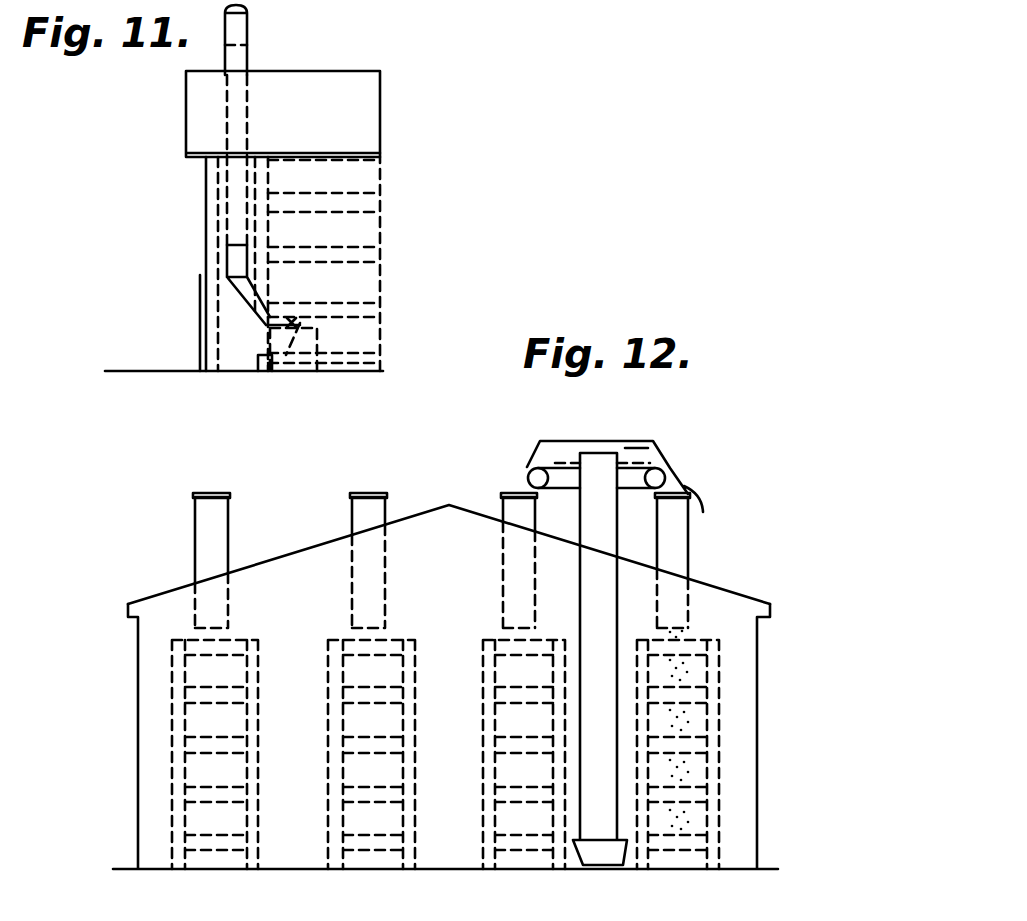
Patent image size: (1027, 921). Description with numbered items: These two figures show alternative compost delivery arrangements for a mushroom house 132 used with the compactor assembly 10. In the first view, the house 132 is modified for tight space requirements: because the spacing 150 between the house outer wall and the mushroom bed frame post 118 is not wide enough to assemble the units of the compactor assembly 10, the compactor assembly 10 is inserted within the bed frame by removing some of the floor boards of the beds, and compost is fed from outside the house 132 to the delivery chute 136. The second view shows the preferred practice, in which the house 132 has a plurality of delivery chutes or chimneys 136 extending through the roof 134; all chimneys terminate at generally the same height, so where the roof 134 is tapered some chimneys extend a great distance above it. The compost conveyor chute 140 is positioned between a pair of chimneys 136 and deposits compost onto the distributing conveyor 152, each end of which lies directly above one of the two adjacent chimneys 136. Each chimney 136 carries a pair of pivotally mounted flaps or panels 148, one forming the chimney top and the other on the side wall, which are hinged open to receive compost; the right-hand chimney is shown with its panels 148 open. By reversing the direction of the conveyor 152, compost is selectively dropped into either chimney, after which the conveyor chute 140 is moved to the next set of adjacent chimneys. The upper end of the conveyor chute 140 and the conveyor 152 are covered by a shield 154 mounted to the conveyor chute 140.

In FIG. 11, the compactor assembly 10 is at (290, 371).
In FIG. 11, the post 118 is at (222, 247).
In FIG. 11, the house 132 is at (211, 210).
In FIG. 12, the house 132 is at (742, 674).
In FIG. 12, the roof 134 is at (742, 591).
In FIG. 11, the delivery chute 136 is at (237, 34).
In FIG. 12, the delivery chute 136 is at (517, 513).
In FIG. 12, the compost conveyor chute 140 is at (655, 520).
In FIG. 12, the panel 148 is at (243, 489).
In FIG. 11, the spacing 150 is at (235, 350).
In FIG. 12, the distributing conveyor 152 is at (550, 489).
In FIG. 12, the shield 154 is at (590, 442).